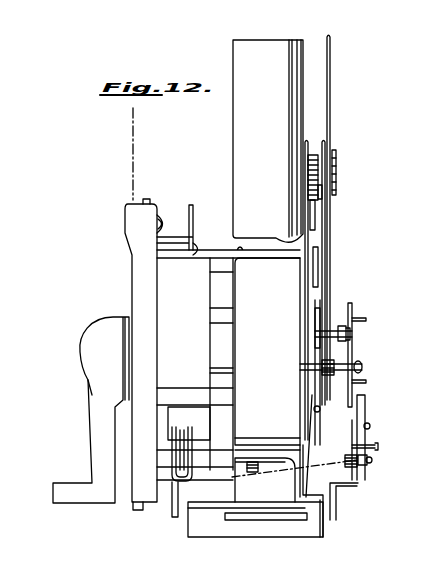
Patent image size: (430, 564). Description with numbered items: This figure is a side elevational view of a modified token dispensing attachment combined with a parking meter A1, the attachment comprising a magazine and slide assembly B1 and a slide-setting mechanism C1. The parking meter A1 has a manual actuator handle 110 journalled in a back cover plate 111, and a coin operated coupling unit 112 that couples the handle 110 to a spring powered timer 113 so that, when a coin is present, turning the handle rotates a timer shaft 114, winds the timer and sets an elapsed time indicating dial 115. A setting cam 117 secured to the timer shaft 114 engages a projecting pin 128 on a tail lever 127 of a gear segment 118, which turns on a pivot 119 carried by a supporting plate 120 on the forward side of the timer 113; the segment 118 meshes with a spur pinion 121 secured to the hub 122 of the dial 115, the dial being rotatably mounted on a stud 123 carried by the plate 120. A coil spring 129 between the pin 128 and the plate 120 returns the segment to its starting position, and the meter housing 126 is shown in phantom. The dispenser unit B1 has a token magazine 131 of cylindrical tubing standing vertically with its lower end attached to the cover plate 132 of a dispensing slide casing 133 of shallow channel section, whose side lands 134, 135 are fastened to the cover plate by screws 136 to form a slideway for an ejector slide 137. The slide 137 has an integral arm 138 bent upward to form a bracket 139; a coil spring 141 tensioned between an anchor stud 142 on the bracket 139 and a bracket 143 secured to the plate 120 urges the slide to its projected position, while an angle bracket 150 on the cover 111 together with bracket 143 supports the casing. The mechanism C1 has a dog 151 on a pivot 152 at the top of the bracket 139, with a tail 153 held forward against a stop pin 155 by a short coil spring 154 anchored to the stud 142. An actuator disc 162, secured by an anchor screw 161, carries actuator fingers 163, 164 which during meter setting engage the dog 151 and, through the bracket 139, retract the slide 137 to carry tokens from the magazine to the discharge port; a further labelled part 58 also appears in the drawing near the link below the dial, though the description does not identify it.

The pivot 58 is at (320, 408).
The manual actuator handle 110 is at (85, 340).
The back cover plate 111 is at (127, 255).
The coin operated coupling unit 112 is at (197, 255).
The spring powered timer 113 is at (274, 281).
The timer shaft 114 is at (300, 353).
The elapsed time indicating dial 115 is at (330, 64).
The setting cam 117 is at (313, 433).
The gear segment 118 is at (313, 222).
The pivot 119 is at (320, 270).
The supporting plate 120 is at (305, 383).
The spur pinion 121 is at (312, 158).
The hub 122 is at (320, 172).
The stud 123 is at (327, 191).
The meter housing 126 is at (133, 165).
The tail lever 127 is at (315, 327).
The projecting pin 128 is at (340, 356).
The coil spring 129 is at (352, 333).
The token magazine 131 is at (267, 46).
The cover plate 132 is at (277, 505).
The dispensing slide casing 133 is at (303, 540).
The land 134 is at (324, 527).
The land 135 is at (213, 515).
The screws 136 is at (183, 522).
The ejector slide 137 is at (258, 518).
The arm 138 is at (332, 518).
The bracket 139 is at (352, 485).
The coil spring 141 is at (337, 462).
The anchor stud 142 is at (362, 466).
The bracket 143 is at (305, 430).
The angle bracket 150 is at (213, 480).
The dog 151 is at (365, 400).
The pivot 152 is at (370, 426).
The tail 153 is at (372, 457).
The coil spring 154 is at (372, 461).
The stop pin 155 is at (378, 446).
The anchor screw 161 is at (362, 368).
The actuator disc 162 is at (357, 302).
The actuator finger 163 is at (360, 383).
The actuator finger 164 is at (358, 318).
The parking meter A1 is at (115, 300).
The magazine and slide assembly B1 is at (226, 141).
The slide-setting mechanism C1 is at (402, 493).